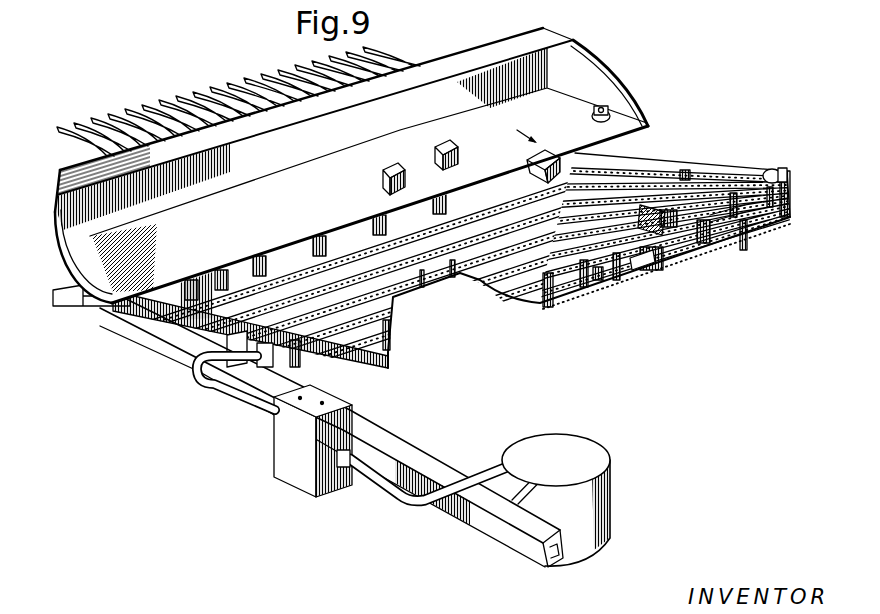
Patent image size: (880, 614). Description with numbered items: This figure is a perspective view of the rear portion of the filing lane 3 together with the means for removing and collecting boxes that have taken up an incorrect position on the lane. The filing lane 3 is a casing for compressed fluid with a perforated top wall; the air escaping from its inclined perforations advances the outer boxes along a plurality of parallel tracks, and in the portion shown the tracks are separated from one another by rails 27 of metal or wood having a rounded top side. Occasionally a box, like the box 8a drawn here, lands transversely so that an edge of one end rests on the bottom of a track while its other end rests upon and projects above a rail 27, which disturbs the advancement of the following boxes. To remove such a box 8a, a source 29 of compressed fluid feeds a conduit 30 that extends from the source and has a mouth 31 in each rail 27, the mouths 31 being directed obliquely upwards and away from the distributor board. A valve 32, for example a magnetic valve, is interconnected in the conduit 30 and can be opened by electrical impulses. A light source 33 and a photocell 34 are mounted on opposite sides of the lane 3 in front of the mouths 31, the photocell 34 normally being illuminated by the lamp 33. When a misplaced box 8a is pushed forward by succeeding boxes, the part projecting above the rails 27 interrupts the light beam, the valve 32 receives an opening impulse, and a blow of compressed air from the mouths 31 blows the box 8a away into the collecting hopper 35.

The filing lane 3 is at (150, 343).
The box occupying an incorrect position 8a is at (653, 263).
The rail 27 is at (740, 215).
The source of compressed fluid 29 is at (593, 458).
The conduit for compressed fluid 30 is at (197, 373).
The mouth 31 is at (690, 193).
The valve 32 is at (287, 450).
The light source 33 is at (273, 363).
The photocell 34 is at (777, 167).
The collecting hopper 35 is at (382, 139).